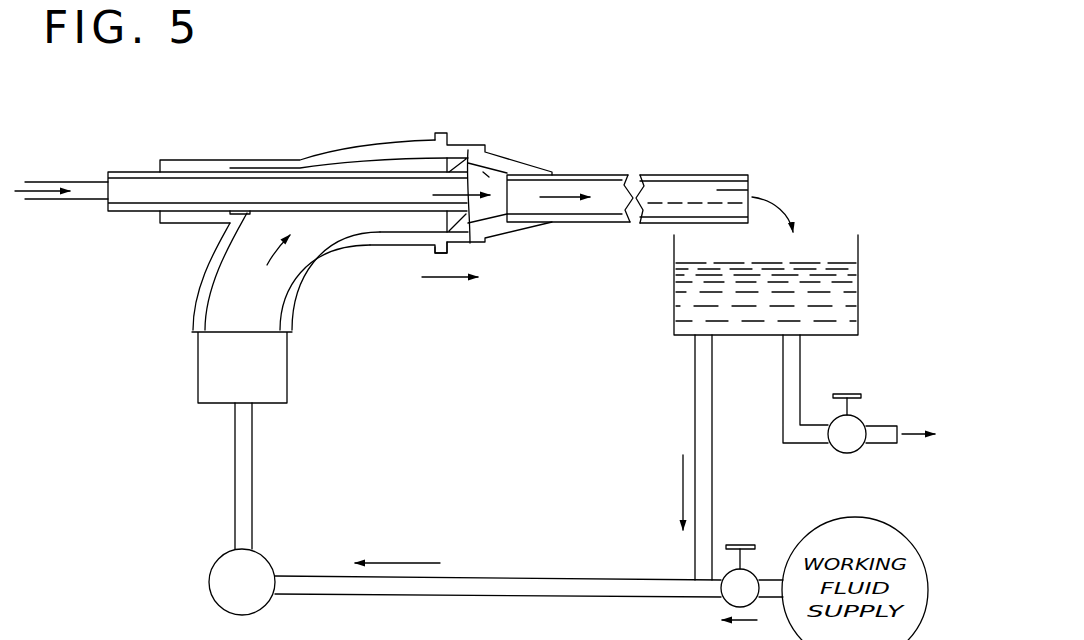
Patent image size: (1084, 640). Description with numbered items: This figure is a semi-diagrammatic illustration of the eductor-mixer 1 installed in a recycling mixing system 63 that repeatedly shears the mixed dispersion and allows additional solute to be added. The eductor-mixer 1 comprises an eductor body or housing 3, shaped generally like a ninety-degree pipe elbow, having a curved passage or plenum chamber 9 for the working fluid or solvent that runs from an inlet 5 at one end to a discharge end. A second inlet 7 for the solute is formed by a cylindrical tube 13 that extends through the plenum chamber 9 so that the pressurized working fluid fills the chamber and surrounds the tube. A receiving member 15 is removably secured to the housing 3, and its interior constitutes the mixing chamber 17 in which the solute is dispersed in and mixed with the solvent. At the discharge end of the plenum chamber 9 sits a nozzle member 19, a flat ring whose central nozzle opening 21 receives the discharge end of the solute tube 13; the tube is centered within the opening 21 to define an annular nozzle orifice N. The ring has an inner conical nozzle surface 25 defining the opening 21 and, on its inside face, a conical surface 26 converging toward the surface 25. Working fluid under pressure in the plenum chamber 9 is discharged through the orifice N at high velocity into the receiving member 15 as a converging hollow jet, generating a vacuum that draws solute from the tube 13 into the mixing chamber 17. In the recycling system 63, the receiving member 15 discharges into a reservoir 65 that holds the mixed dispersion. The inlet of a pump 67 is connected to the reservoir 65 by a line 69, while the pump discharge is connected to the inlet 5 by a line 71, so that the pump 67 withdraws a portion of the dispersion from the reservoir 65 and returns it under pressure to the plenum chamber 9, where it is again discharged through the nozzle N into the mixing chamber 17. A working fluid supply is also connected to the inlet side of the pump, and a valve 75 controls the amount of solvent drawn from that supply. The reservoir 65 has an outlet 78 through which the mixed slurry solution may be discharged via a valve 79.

The eductor-mixer 1 is at (320, 128).
The eductor body or housing 3 is at (334, 269).
The inlet 5 is at (207, 405).
The second inlet 7 is at (115, 193).
The passage or plenum chamber 9 is at (406, 162).
The cylindrical tube 13 is at (138, 172).
The receiving member 15 is at (649, 156).
The mixing chamber 17 is at (504, 188).
The nozzle member 19 is at (468, 150).
The nozzle opening 21 is at (470, 243).
The conical nozzle surface 25 is at (484, 174).
The annular nozzle opening or orifice N is at (478, 176).
The conical surface 26 is at (727, 175).
The recycling mixing system 63 is at (572, 562).
The reservoir 65 is at (858, 300).
The pump 67 is at (277, 560).
The line 69 is at (485, 577).
The line 71 is at (253, 430).
The valve 75 is at (722, 598).
The outlet 78 is at (880, 425).
The valve 79 is at (848, 455).